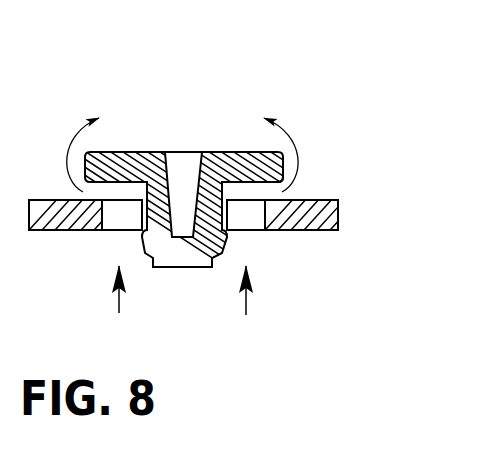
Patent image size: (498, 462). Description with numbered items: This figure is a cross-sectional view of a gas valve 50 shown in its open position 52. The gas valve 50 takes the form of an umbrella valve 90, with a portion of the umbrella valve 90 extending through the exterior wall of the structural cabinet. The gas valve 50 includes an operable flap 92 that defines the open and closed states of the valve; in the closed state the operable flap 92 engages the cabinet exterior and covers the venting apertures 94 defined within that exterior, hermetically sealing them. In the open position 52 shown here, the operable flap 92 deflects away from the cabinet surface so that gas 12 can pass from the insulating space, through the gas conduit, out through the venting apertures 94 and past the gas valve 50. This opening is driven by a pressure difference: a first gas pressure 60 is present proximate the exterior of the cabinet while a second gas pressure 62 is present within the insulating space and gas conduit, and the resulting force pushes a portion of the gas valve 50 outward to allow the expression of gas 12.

The gas 12 is at (62, 148).
The gas valve 50 is at (209, 126).
The open position 52 is at (314, 176).
The first gas pressure 60 is at (163, 91).
The second gas pressure 62 is at (164, 338).
The umbrella valve 90 is at (184, 137).
The operable flap 92 is at (128, 148).
The venting aperture 94 is at (113, 220).